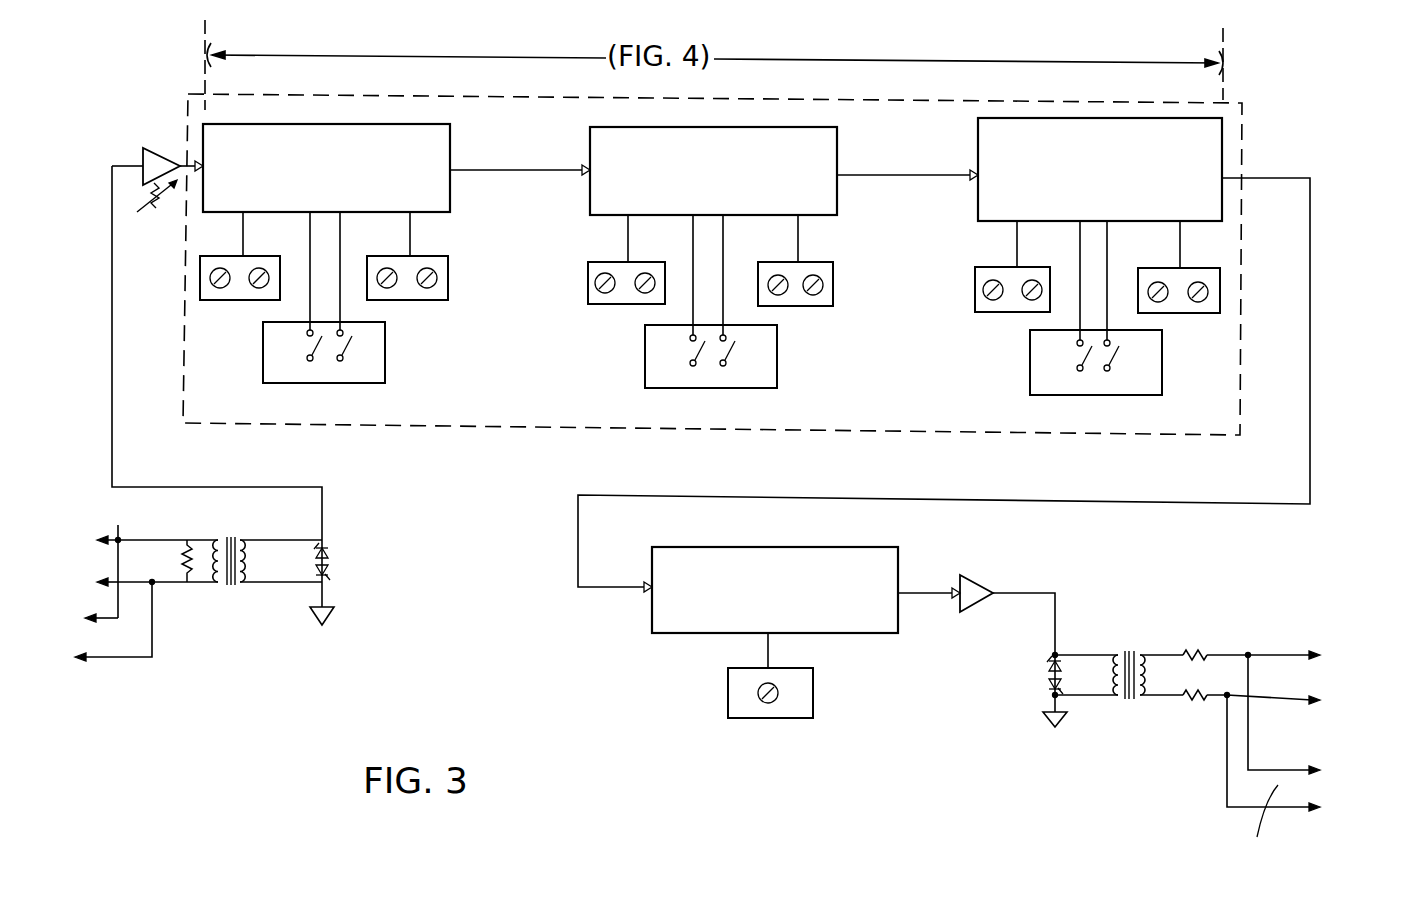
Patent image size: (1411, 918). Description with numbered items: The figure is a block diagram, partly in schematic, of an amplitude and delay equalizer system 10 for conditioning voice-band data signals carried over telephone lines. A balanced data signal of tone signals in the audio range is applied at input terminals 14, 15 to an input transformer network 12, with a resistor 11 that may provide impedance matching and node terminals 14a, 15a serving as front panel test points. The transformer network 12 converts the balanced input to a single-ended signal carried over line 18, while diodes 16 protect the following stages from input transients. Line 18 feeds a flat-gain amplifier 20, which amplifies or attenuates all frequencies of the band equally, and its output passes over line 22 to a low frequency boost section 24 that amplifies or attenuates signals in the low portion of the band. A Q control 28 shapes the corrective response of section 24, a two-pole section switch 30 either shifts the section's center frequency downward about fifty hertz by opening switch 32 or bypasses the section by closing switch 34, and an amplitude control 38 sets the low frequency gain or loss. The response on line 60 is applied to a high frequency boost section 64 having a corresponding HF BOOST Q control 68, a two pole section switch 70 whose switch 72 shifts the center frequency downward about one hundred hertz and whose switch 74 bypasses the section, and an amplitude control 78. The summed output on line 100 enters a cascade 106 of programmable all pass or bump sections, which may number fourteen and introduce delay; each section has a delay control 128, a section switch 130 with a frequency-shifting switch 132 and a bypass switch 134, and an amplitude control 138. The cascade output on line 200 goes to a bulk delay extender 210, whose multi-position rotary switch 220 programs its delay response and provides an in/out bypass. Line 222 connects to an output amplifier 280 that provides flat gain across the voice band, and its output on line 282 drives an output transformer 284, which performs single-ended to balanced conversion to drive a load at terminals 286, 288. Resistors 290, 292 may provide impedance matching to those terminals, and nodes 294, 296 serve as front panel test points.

The amplitude and delay equalizer system 10 is at (471, 545).
The resistor 11 is at (190, 571).
The input transformer network 12 is at (230, 530).
The input terminal 14 is at (108, 536).
The input terminal 15 is at (107, 578).
The node terminal 14a is at (103, 616).
The node terminal 15a is at (92, 661).
The diodes 16 is at (330, 565).
The line 18 is at (115, 398).
The amplifier 20 is at (147, 150).
The line 22 is at (180, 160).
The low frequency boost section 24 is at (492, 130).
The Q control 28 is at (226, 229).
The two-pole section switch 30 is at (263, 347).
The switch 32 is at (312, 361).
The switch 34 is at (342, 361).
The amplitude control 38 is at (462, 233).
The line 60 is at (540, 173).
The high frequency boost section 64 is at (771, 127).
The HF BOOST Q control 68 is at (628, 305).
The two pole section switch 70 is at (645, 360).
The switch 72 is at (697, 368).
The switch 74 is at (726, 362).
The amplitude control 78 is at (833, 282).
The line 100 is at (893, 172).
The cascade of bump sections 106 is at (1152, 118).
The delay control 128 is at (1010, 312).
The section switch 130 is at (1093, 397).
The switch 132 is at (1082, 372).
The switch 134 is at (1112, 357).
The amplitude control 138 is at (1180, 313).
The line 200 is at (1195, 500).
The bulk delay extender 210 is at (843, 547).
The switch 220 is at (813, 705).
The line 222 is at (927, 595).
The output amplifier 280 is at (983, 583).
The line 282 is at (1057, 638).
The output transformer 284 is at (1165, 629).
The terminal 286 is at (1280, 655).
The terminal 288 is at (1293, 702).
The resistor 290 is at (1227, 615).
The resistor 292 is at (1202, 708).
The node 294 is at (1295, 770).
The node 296 is at (1297, 808).